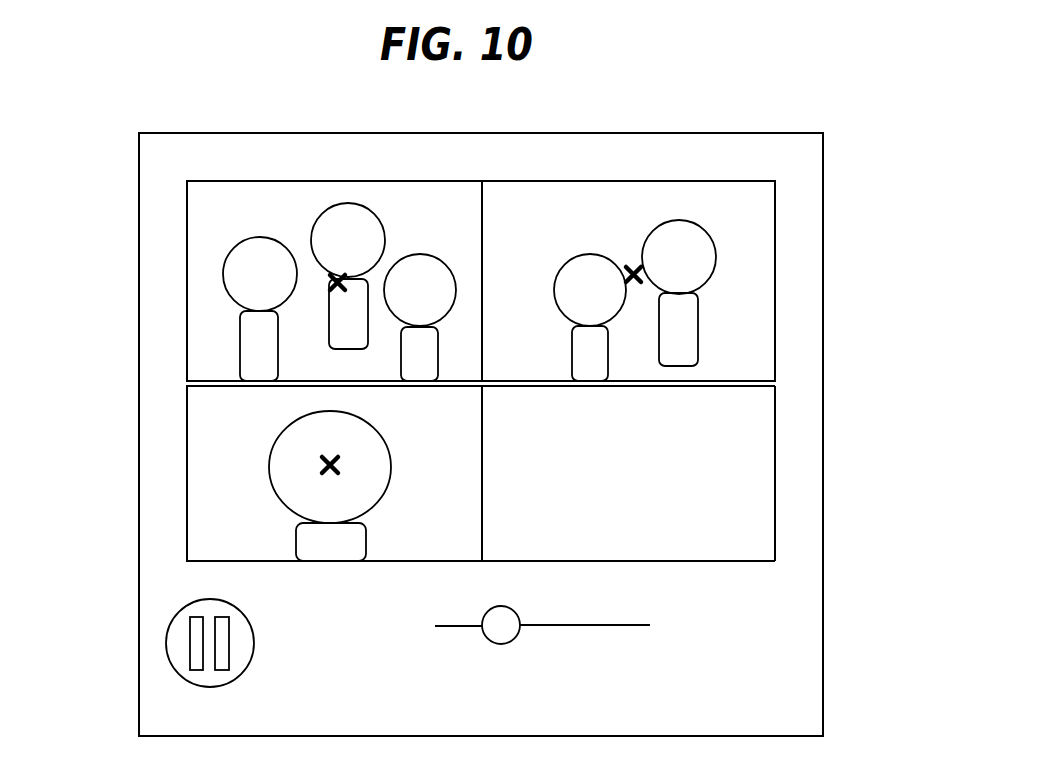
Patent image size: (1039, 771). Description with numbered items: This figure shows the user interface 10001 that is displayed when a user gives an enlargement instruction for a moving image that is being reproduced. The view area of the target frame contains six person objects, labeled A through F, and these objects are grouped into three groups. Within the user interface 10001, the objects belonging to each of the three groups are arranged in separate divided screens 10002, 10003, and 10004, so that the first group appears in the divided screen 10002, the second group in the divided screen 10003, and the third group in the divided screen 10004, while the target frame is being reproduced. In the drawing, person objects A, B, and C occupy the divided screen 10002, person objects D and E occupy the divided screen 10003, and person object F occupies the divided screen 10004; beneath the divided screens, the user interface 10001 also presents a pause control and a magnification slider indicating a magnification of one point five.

The user interface 10001 is at (748, 103).
The divided screen 10002 is at (208, 228).
The divided screen 10003 is at (753, 285).
The divided screen 10004 is at (208, 461).